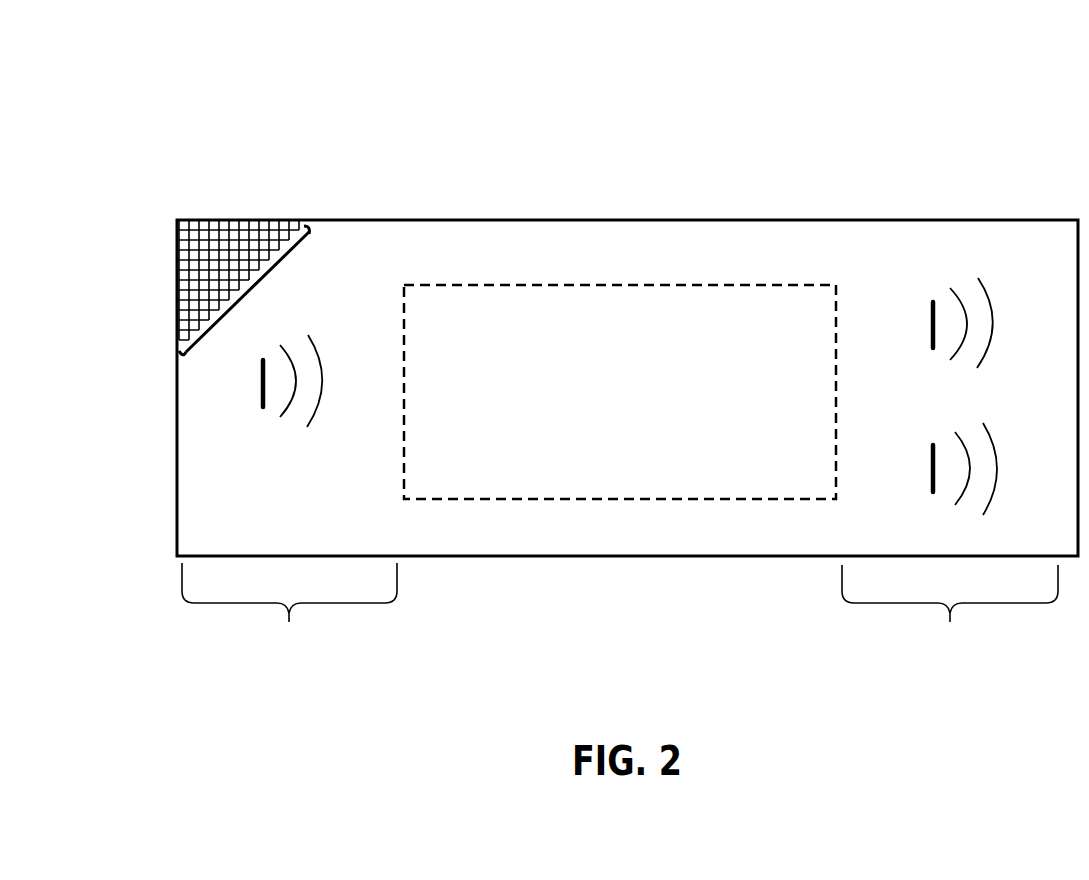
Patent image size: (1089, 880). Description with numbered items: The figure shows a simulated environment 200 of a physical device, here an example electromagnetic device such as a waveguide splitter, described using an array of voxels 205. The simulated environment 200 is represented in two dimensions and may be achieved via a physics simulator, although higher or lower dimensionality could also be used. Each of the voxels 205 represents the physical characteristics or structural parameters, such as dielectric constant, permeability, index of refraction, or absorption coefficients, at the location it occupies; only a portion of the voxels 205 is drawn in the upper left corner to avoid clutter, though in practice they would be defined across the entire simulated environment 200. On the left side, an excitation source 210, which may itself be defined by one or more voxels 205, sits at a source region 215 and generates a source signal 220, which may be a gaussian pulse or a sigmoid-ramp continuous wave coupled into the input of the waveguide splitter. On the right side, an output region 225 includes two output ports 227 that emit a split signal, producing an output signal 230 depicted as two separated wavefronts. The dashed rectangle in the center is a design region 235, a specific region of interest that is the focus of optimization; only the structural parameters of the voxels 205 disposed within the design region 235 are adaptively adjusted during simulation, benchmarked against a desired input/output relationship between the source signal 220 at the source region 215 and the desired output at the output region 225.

The simulated environment 200 is at (146, 96).
The voxels 205 is at (253, 296).
The excitation source 210 is at (261, 413).
The source region 215 is at (289, 613).
The source signal 220 is at (308, 338).
The output region 225 is at (950, 614).
The output ports 227 is at (932, 356).
The output signal 230 is at (987, 296).
The design region 235 is at (630, 402).